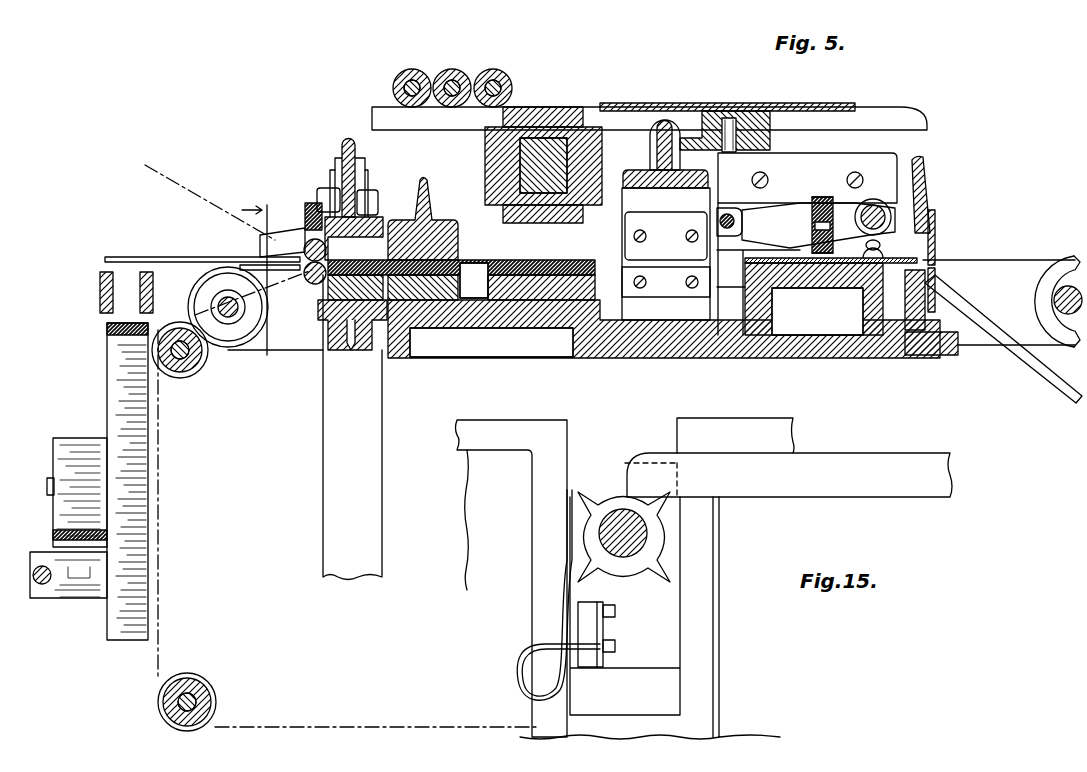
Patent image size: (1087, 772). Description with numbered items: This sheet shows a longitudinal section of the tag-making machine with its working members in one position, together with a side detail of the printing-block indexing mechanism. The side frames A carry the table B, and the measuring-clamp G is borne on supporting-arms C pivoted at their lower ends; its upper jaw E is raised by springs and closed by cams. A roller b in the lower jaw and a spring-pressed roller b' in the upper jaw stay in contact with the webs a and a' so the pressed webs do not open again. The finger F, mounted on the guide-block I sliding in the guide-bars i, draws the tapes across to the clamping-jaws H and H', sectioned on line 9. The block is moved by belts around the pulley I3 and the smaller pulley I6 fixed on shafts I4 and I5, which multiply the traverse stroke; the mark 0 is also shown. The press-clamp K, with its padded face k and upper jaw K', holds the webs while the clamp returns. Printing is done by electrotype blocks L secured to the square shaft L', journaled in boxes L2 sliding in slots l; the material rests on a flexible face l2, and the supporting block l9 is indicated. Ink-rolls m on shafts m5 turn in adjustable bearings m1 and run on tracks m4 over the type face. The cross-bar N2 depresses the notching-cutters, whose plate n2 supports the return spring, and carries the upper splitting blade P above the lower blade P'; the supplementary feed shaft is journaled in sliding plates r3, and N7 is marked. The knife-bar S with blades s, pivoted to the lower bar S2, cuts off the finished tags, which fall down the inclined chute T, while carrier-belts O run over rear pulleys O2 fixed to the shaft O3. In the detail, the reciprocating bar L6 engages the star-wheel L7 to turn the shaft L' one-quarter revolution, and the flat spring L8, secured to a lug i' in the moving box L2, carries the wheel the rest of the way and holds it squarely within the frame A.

In FIG. 5, the ink-rolls m is at (406, 71).
In FIG. 5, the ink-roll shafts m5 is at (393, 84).
In FIG. 5, the tracks m4 is at (397, 132).
In FIG. 5, the vertically-adjustable bearings m1 is at (728, 108).
In FIG. 5, the blocks L is at (554, 168).
In FIG. 5, the slots l is at (485, 157).
In FIG. 15, the slots l is at (567, 432).
In FIG. 5, the flexible face l2 is at (510, 266).
In FIG. 5, the bar l9 is at (609, 288).
In FIG. 5, the upper jaw E is at (383, 212).
In FIG. 5, the measuring-clamp G is at (356, 350).
In FIG. 5, the supporting-arms C is at (372, 480).
In FIG. 5, the upper jaw K' is at (436, 239).
In FIG. 5, the press-clamp K is at (461, 279).
In FIG. 5, the padding k is at (458, 270).
In FIG. 5, the table B is at (693, 360).
In FIG. 5, the cross-bar N2 is at (625, 190).
In FIG. 5, the pivot N7 is at (718, 215).
In FIG. 5, the upper knife-blade P is at (666, 236).
In FIG. 5, the lower knife-blade P' is at (666, 282).
In FIG. 5, the sliding plates r3 is at (806, 234).
In FIG. 5, the plate n2 is at (882, 243).
In FIG. 5, the knife-bar S is at (932, 175).
In FIG. 5, the blades s is at (936, 230).
In FIG. 5, the lower bar S2 is at (925, 335).
In FIG. 5, the carrier-belts O is at (983, 258).
In FIG. 5, the rear pulleys O2 is at (1050, 258).
In FIG. 5, the shaft O3 is at (1052, 298).
In FIG. 5, the inclined chute T is at (1045, 385).
In FIG. 5, the finger F is at (168, 257).
In FIG. 5, the guide-block I is at (125, 267).
In FIG. 5, the guide-bars i is at (116, 292).
In FIG. 5, the pulley I3 is at (107, 384).
In FIG. 5, the smaller pulley I6 is at (53, 448).
In FIG. 5, the shaft I5 is at (47, 491).
In FIG. 5, the shaft I4 is at (35, 553).
In FIG. 5, the lower clamping-jaw H' is at (237, 322).
In FIG. 5, the upper clamping-jaw H is at (282, 211).
In FIG. 5, the roller b' is at (270, 246).
In FIG. 5, the roller b is at (308, 291).
In FIG. 5, the section line 9 is at (256, 278).
In FIG. 5, the web a is at (228, 237).
In FIG. 5, the web a' is at (349, 530).
In FIG. 5, the point 0 is at (306, 371).
In FIG. 15, the reciprocating bar L6 is at (848, 458).
In FIG. 15, the side frames A is at (700, 705).
In FIG. 15, the star-wheel L7 is at (660, 565).
In FIG. 15, the square shaft L' is at (675, 533).
In FIG. 15, the boxes L2 is at (662, 628).
In FIG. 15, the flat spring L8 is at (518, 639).
In FIG. 15, the lug i' is at (622, 645).